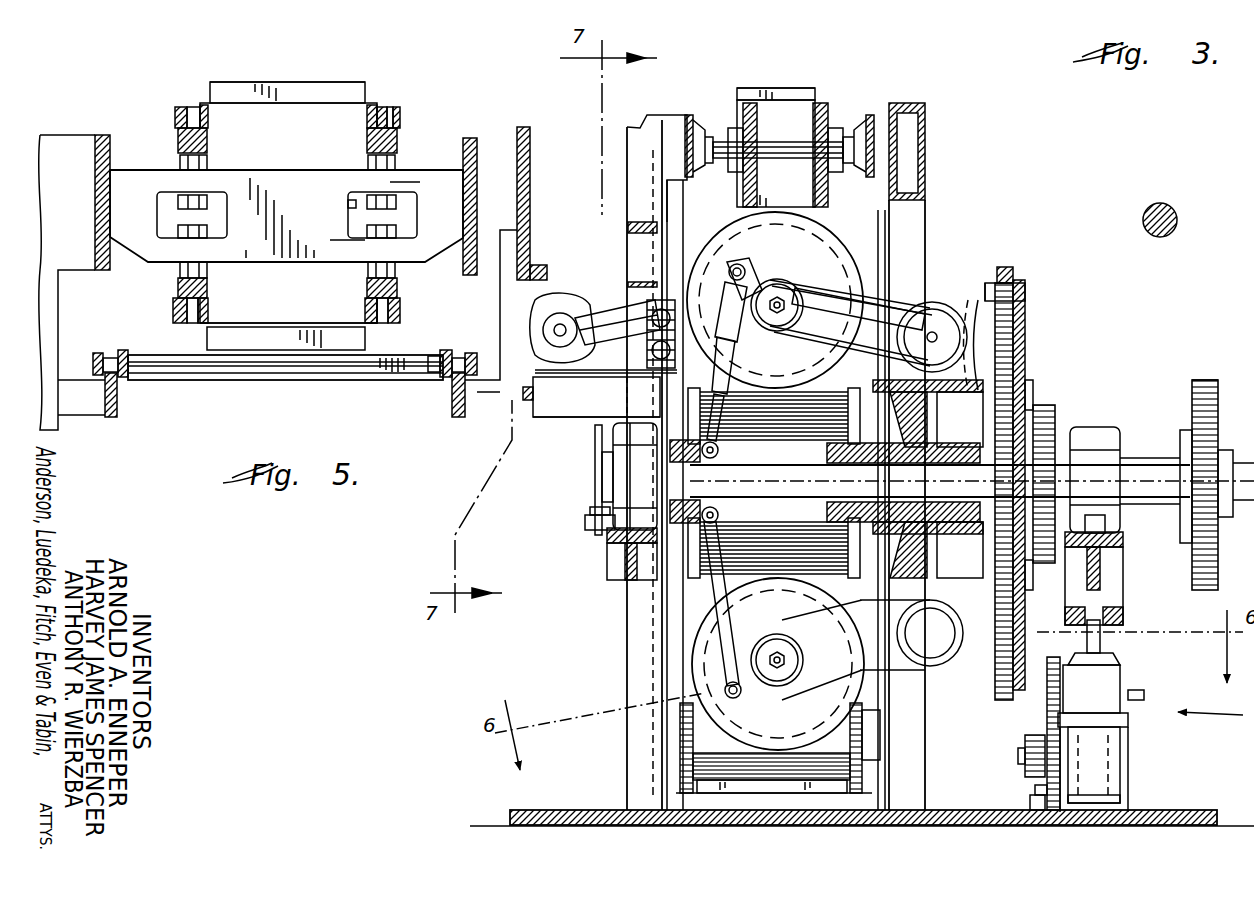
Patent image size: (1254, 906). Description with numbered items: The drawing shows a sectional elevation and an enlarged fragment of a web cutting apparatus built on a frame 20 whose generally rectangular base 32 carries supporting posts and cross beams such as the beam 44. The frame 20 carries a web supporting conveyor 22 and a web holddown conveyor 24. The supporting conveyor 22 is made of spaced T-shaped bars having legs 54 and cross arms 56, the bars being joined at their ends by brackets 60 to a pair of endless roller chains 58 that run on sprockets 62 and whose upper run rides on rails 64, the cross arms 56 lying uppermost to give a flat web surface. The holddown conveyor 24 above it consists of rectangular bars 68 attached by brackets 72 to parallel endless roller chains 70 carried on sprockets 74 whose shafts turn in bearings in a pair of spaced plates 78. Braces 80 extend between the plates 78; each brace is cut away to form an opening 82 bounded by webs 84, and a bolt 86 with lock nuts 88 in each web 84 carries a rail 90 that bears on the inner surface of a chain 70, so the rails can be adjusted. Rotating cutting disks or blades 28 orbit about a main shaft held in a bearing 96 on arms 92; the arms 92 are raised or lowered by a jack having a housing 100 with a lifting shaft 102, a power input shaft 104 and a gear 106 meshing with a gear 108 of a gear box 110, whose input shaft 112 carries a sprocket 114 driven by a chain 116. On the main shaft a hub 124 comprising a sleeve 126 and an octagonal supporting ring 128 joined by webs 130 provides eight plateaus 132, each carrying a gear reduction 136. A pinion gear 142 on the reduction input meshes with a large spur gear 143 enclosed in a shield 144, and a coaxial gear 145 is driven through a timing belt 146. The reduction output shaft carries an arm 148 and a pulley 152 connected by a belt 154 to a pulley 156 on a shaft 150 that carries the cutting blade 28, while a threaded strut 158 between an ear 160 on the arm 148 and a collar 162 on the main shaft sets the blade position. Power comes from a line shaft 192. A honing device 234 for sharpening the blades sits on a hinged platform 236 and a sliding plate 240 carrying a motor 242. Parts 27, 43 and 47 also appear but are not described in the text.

In FIG. 3, the frame 20 is at (624, 790).
In FIG. 5, the web supporting conveyor 22 is at (373, 394).
In FIG. 3, the web supporting conveyor 22 is at (853, 208).
In FIG. 5, the web holddown conveyor 24 is at (358, 70).
In FIG. 3, the web holddown conveyor 24 is at (803, 85).
In FIG. 3, the drive gear 27 is at (1206, 380).
In FIG. 3, the cutting disks or blades 28 is at (785, 193).
In FIG. 3, the base 32 is at (512, 816).
In FIG. 3, the bracket 43 is at (642, 118).
In FIG. 3, the beam 44 is at (528, 131).
In FIG. 3, the cross member 47 is at (630, 228).
In FIG. 5, the legs 54 is at (290, 372).
In FIG. 5, the cross arms 56 is at (265, 366).
In FIG. 5, the endless roller chains 58 is at (100, 356).
In FIG. 5, the brackets 60 is at (123, 350).
In FIG. 3, the sprockets 62 is at (680, 240).
In FIG. 5, the rails 64 is at (111, 417).
In FIG. 5, the bars 68 is at (295, 82).
In FIG. 3, the bars 68 is at (776, 88).
In FIG. 5, the endless roller chains 70 is at (192, 107).
In FIG. 3, the endless roller chains 70 is at (740, 103).
In FIG. 5, the bracket 72 is at (208, 116).
In FIG. 3, the sprockets 74 is at (835, 126).
In FIG. 5, the plates 78 is at (100, 145).
In FIG. 3, the plates 78 is at (690, 115).
In FIG. 5, the braces 80 is at (303, 160).
In FIG. 5, the opening 82 is at (365, 203).
In FIG. 5, the webs 84 is at (368, 246).
In FIG. 5, the bolt 86 is at (186, 214).
In FIG. 5, the lock nut 88 is at (188, 182).
In FIG. 5, the rail 90 is at (207, 141).
In FIG. 3, the arms 92 is at (610, 560).
In FIG. 3, the bearing 96 is at (628, 470).
In FIG. 3, the housing 100 is at (1120, 722).
In FIG. 3, the lifting shaft 102 is at (1104, 650).
In FIG. 3, the power input shaft 104 is at (1145, 694).
In FIG. 3, the gear 106 is at (1091, 683).
In FIG. 3, the gear 108 is at (1053, 812).
In FIG. 3, the gear box 110 is at (1120, 776).
In FIG. 3, the input shaft 112 is at (1023, 770).
In FIG. 3, the sprocket 114 is at (1036, 800).
In FIG. 3, the chain 116 is at (1022, 802).
In FIG. 3, the hub 124 is at (1028, 372).
In FIG. 3, the sleeve 126 is at (832, 477).
In FIG. 3, the supporting ring 128 is at (966, 300).
In FIG. 3, the webs 130 is at (830, 452).
In FIG. 3, the plateaus 132 is at (1022, 347).
In FIG. 3, the gear reduction 136 is at (949, 664).
In FIG. 3, the pinion gear 142 is at (1028, 292).
In FIG. 3, the spur gear 143 is at (1014, 408).
In FIG. 3, the housing or shield 144 is at (1020, 268).
In FIG. 3, the gear 145 is at (1118, 420).
In FIG. 3, the timing belt 146 is at (1047, 405).
In FIG. 3, the arm 148 is at (873, 250).
In FIG. 3, the shaft 150 is at (790, 618).
In FIG. 3, the pulley 152 is at (965, 305).
In FIG. 3, the belt 154 is at (908, 285).
In FIG. 3, the pulley 156 is at (740, 335).
In FIG. 3, the brace or strut 158 is at (610, 575).
In FIG. 3, the ear 160 is at (803, 282).
In FIG. 3, the collar 162 is at (625, 478).
In FIG. 3, the line shaft 192 is at (1165, 205).
In FIG. 3, the honing device 234 is at (645, 278).
In FIG. 3, the platform 236 is at (575, 405).
In FIG. 3, the plate 240 is at (600, 393).
In FIG. 3, the motor 242 is at (616, 283).